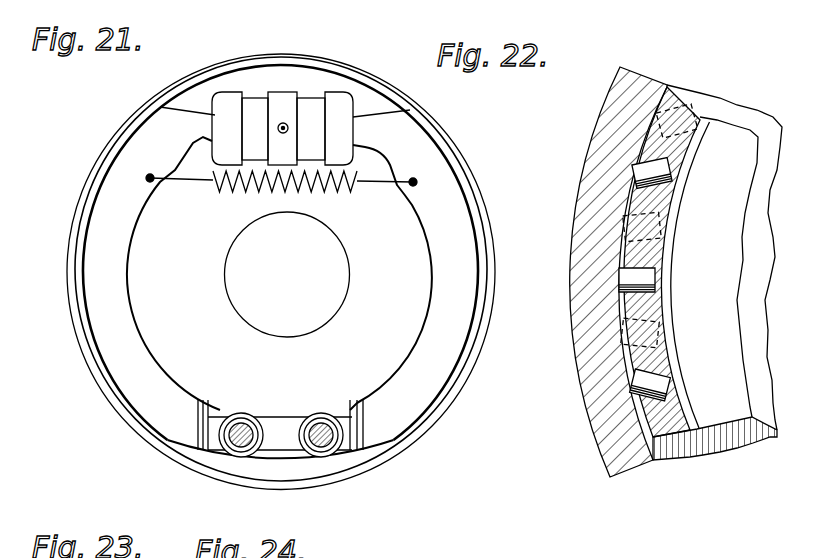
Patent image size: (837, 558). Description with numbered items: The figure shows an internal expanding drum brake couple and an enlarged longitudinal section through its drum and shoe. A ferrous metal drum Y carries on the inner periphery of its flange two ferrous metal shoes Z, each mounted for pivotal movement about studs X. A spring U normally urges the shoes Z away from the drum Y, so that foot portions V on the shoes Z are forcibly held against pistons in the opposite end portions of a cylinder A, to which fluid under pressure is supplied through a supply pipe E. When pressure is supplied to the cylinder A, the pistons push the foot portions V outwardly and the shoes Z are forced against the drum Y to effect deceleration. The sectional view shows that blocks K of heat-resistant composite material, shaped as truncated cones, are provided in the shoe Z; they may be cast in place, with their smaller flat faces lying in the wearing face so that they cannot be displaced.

In FIG. 21, the drum Y is at (453, 140).
In FIG. 22, the drum Y is at (580, 233).
In FIG. 21, the shoes Z is at (125, 295).
In FIG. 22, the shoes Z is at (672, 253).
In FIG. 21, the studs X is at (317, 427).
In FIG. 21, the cylinder A is at (256, 108).
In FIG. 21, the supply pipe E is at (285, 124).
In FIG. 21, the foot portions V is at (172, 120).
In FIG. 21, the spring U is at (336, 188).
In FIG. 22, the blocks K is at (653, 122).